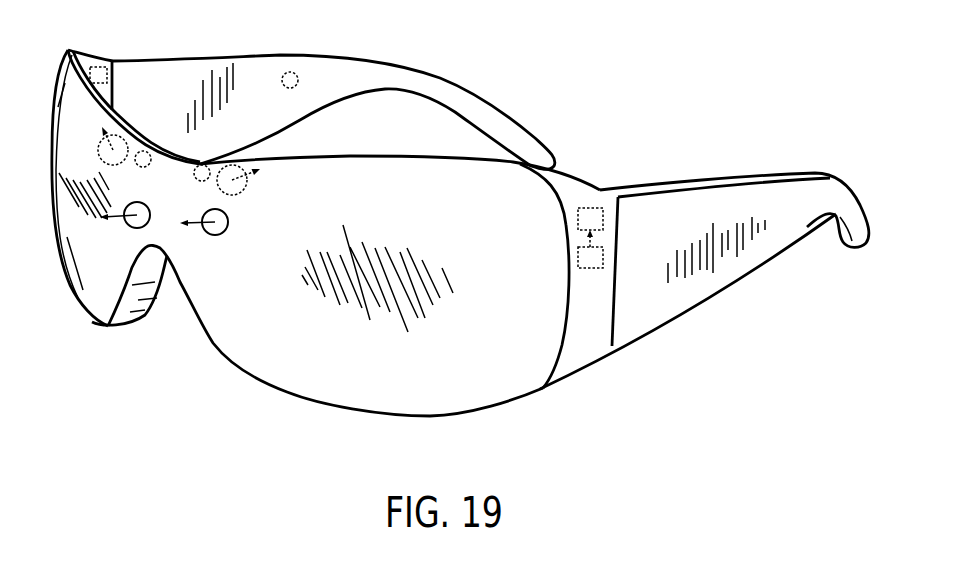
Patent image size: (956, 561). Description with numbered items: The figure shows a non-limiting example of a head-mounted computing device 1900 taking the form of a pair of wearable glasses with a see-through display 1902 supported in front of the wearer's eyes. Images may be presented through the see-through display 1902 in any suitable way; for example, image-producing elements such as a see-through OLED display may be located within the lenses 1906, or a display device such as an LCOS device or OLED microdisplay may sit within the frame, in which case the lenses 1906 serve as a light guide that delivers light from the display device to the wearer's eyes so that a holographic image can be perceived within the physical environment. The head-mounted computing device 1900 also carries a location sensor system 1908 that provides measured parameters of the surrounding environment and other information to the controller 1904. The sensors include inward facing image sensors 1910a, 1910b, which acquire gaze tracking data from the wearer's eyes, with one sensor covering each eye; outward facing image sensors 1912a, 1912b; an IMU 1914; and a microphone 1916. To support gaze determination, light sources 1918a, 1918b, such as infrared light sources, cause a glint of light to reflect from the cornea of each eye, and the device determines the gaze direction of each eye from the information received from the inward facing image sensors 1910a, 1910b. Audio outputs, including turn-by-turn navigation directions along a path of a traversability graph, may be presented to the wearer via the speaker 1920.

The head-mounted computing device 1900 is at (497, 44).
The see-through display 1902 is at (253, 353).
The controller 1904 is at (592, 207).
The lenses 1906 is at (135, 298).
The location sensor system 1908 is at (316, 142).
The inward facing image sensor 1910a is at (242, 193).
The inward facing image sensor 1910b is at (122, 163).
The outward facing image sensor 1912a is at (215, 235).
The outward facing image sensor 1912b is at (137, 228).
The IMU 1914 is at (604, 258).
The microphone 1916 is at (100, 65).
The light source 1918a is at (203, 165).
The light source 1918b is at (141, 151).
The speaker 1920 is at (290, 72).